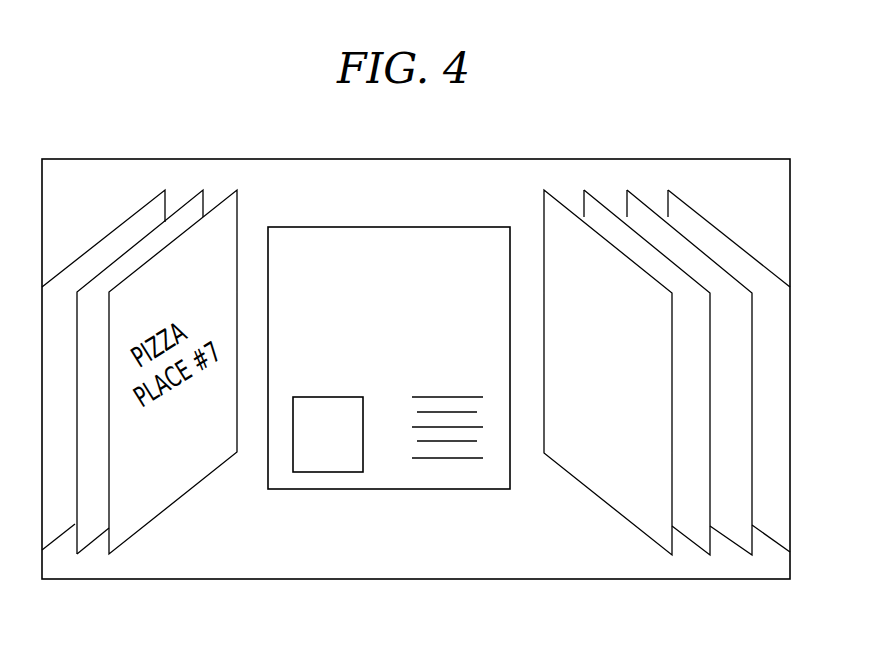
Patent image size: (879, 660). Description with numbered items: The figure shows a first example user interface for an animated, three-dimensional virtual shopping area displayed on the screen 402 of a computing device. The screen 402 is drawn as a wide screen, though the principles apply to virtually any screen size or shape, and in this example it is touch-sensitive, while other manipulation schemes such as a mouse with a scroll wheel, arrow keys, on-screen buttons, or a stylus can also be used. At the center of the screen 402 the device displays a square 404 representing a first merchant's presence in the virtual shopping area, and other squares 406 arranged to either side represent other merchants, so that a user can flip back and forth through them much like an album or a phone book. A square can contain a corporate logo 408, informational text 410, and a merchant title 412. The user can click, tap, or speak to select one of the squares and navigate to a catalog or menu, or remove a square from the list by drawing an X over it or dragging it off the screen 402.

The screen 402 is at (583, 159).
The square 404 is at (447, 458).
The other squares 406 is at (703, 543).
The corporate logo 408 is at (323, 467).
The informational text 410 is at (500, 463).
The merchant title 412 is at (380, 262).